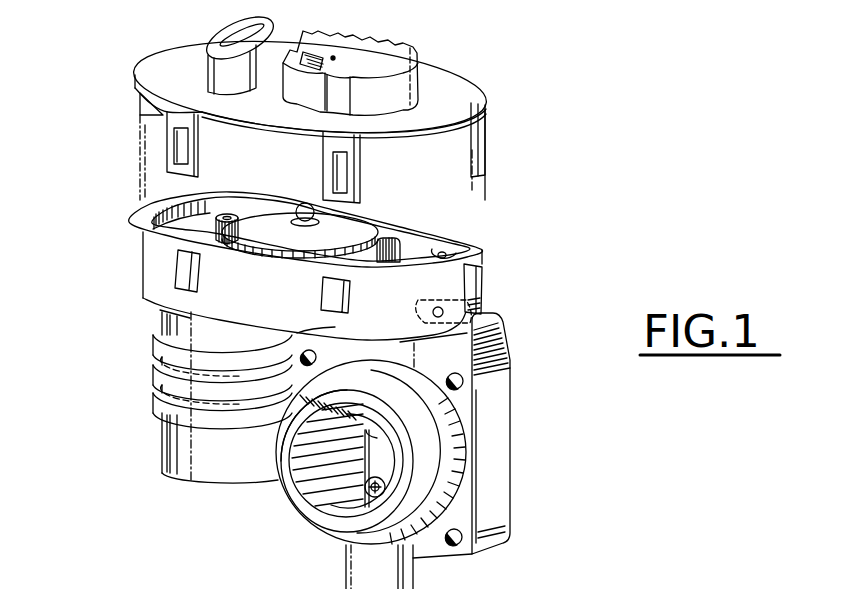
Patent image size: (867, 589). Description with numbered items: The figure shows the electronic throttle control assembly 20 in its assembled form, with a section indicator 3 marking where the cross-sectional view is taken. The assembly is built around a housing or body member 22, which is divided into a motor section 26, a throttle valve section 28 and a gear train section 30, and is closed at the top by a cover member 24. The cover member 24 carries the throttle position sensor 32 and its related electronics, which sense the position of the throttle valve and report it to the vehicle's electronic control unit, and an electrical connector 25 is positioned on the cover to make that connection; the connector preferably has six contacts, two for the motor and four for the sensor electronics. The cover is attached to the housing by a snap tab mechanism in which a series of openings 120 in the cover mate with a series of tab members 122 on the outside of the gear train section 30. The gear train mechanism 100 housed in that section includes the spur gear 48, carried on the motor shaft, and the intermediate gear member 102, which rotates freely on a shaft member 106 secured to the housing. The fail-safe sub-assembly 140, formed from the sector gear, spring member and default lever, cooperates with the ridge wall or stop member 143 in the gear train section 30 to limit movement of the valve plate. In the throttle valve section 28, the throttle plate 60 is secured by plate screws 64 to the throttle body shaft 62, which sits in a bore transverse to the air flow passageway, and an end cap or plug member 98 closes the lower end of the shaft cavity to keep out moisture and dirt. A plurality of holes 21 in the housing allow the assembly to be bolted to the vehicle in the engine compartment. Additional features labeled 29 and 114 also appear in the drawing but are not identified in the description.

The electronic throttle control assembly 20 is at (112, 382).
The holes 21 is at (463, 389).
The housing or body member 22 is at (498, 372).
The cover member 24 is at (447, 93).
The electrical connector 25 is at (243, 44).
The motor section 26 is at (163, 443).
The throttle valve section 28 is at (503, 452).
The bore lip 29 is at (290, 483).
The gear train section 30 is at (150, 270).
The throttle position sensor 32 is at (380, 66).
The spur gear 48 is at (143, 231).
The throttle plate 60 is at (340, 463).
The throttle body shaft 62 is at (379, 477).
The plate screws 64 is at (363, 450).
The end cap member or plug member 98 is at (432, 588).
The gear train mechanism 100 is at (381, 200).
The intermediate gear member 102 is at (266, 222).
The shaft member 106 is at (311, 210).
The partially shown element 114 is at (727, 584).
The openings 120 is at (340, 163).
The tab members 122 is at (195, 284).
The sub-assembly 140 is at (425, 246).
The ridge wall or stop member 143 is at (440, 250).
The section line for FIG. 3 is at (127, 183).